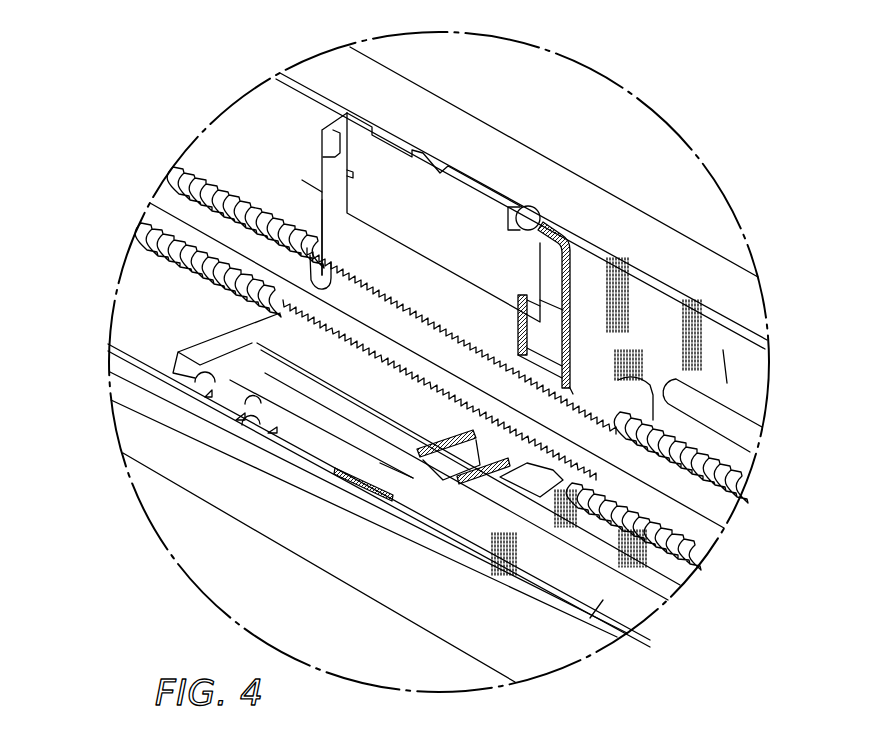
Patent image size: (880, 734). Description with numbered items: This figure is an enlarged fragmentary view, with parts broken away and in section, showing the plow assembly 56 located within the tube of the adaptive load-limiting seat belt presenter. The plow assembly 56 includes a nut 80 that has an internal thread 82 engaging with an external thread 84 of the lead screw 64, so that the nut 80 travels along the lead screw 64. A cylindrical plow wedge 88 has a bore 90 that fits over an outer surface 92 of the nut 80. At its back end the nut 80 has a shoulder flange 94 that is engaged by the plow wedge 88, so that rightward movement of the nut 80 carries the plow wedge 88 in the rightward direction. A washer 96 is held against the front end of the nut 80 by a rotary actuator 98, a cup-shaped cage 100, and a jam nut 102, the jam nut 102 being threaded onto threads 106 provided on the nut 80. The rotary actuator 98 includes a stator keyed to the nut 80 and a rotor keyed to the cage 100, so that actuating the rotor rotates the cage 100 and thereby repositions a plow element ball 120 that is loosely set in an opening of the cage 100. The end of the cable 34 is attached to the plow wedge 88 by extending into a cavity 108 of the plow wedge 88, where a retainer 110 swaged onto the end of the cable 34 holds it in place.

The cable 34 is at (540, 542).
The plow assembly 56 is at (420, 181).
The lead screw 64 is at (222, 172).
The nut 80 is at (327, 170).
The internal thread 82 is at (306, 240).
The external thread 84 is at (228, 183).
The plow wedge 88 is at (370, 185).
The bore 90 is at (428, 262).
The outer surface 92 is at (502, 292).
The shoulder flange 94 is at (302, 180).
The washer 96 is at (342, 158).
The rotary actuator 98 is at (614, 405).
The cup-shaped cage 100 is at (577, 290).
The jam nut 102 is at (590, 378).
The threads 106 is at (580, 350).
The cavity 108 is at (203, 382).
The retainer 110 is at (245, 407).
The ball 120 is at (531, 219).